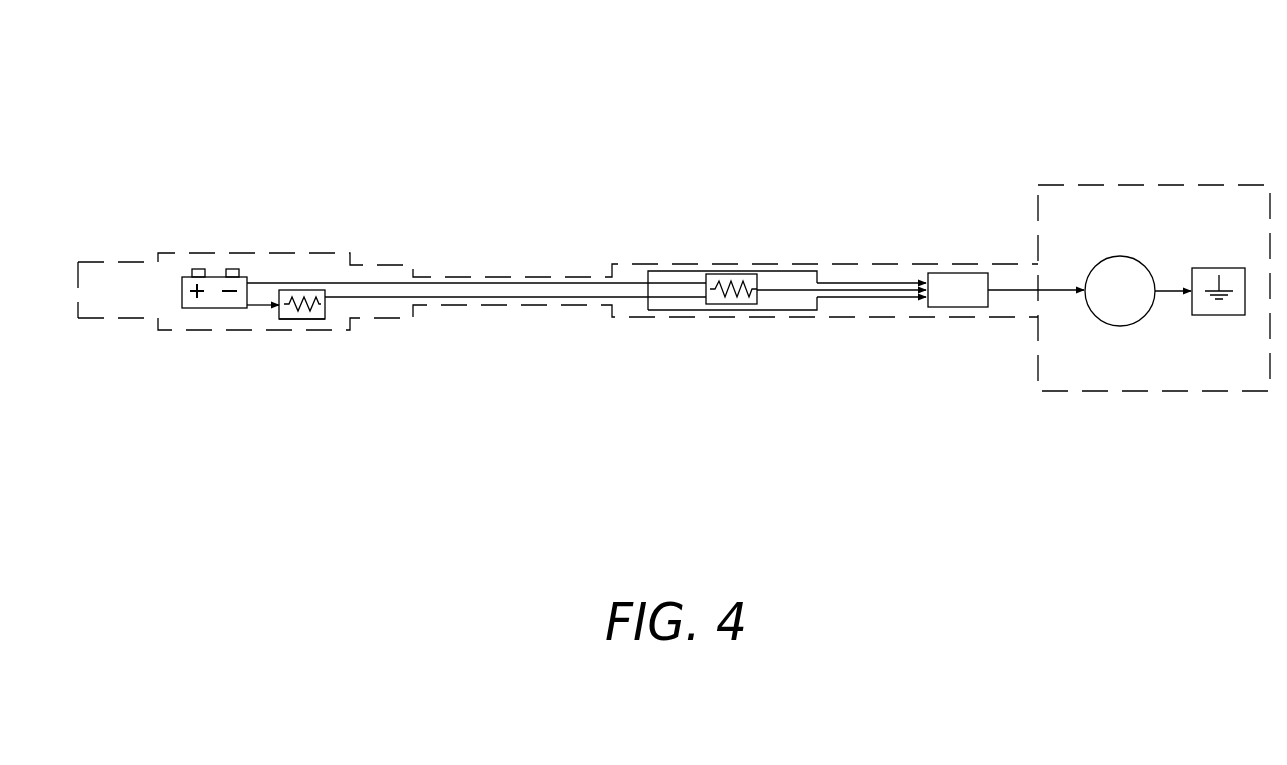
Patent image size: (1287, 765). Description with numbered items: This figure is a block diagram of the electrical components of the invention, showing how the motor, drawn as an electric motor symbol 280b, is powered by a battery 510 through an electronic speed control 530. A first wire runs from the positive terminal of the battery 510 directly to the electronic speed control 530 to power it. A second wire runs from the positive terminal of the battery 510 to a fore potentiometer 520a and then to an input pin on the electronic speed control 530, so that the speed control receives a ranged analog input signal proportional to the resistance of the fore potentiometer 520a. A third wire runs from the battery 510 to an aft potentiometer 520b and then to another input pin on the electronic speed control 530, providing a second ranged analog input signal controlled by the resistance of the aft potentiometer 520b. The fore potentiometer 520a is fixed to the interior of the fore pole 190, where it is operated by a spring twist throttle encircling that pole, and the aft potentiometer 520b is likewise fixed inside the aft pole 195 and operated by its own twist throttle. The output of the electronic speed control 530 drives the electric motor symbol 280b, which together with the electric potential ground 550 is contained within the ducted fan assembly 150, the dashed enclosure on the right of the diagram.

The ducted fan assembly 150 is at (1153, 392).
The fore pole 190 is at (313, 320).
The aft pole 195 is at (780, 312).
The electric motor symbol 280b is at (1102, 256).
The battery 510 is at (213, 277).
The fore potentiometer 520a is at (287, 319).
The aft potentiometer 520b is at (723, 273).
The electronic speed control 530 is at (953, 273).
The electric potential ground 550 is at (1225, 268).